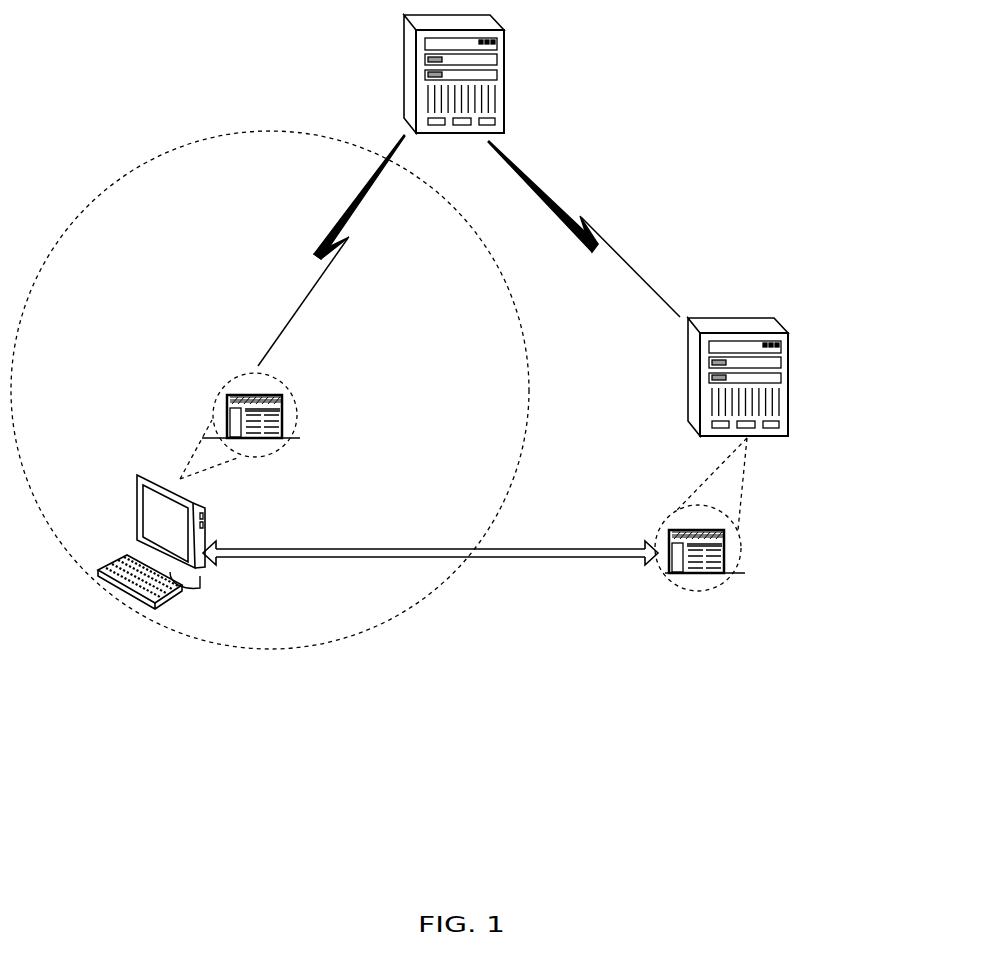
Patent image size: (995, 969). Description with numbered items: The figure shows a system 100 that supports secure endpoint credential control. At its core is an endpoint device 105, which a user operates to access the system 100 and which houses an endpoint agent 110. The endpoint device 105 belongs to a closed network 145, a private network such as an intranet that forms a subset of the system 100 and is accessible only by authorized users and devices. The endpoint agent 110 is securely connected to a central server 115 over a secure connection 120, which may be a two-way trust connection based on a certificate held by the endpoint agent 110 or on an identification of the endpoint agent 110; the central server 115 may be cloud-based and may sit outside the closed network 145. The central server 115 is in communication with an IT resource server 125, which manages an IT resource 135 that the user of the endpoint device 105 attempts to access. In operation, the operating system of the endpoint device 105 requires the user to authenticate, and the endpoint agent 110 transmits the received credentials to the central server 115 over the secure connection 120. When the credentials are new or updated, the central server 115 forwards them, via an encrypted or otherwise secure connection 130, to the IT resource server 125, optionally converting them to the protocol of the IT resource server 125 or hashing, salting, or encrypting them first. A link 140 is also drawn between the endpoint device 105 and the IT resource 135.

The system 100 is at (786, 870).
The endpoint device 105 is at (143, 470).
The endpoint agent 110 is at (297, 407).
The central server 115 is at (402, 57).
The secure connection 120 is at (322, 248).
The IT resource server 125 is at (792, 357).
The secure connection 130 is at (590, 222).
The IT resource 135 is at (735, 573).
The communication link 140 is at (305, 557).
The closed network 145 is at (423, 598).